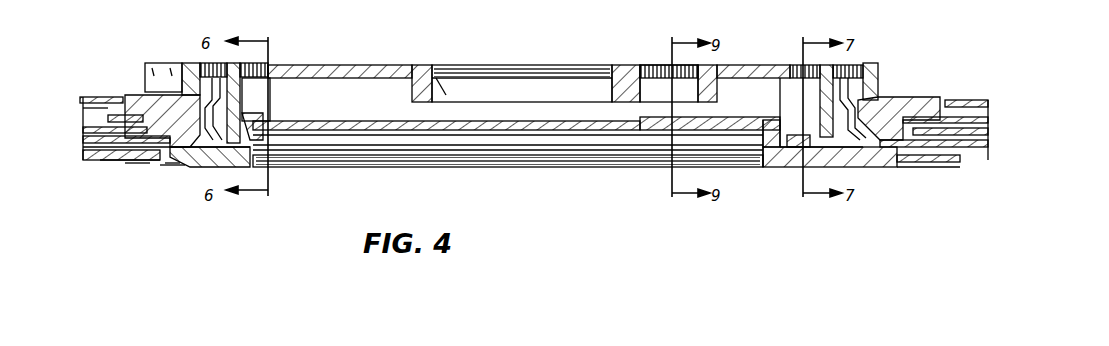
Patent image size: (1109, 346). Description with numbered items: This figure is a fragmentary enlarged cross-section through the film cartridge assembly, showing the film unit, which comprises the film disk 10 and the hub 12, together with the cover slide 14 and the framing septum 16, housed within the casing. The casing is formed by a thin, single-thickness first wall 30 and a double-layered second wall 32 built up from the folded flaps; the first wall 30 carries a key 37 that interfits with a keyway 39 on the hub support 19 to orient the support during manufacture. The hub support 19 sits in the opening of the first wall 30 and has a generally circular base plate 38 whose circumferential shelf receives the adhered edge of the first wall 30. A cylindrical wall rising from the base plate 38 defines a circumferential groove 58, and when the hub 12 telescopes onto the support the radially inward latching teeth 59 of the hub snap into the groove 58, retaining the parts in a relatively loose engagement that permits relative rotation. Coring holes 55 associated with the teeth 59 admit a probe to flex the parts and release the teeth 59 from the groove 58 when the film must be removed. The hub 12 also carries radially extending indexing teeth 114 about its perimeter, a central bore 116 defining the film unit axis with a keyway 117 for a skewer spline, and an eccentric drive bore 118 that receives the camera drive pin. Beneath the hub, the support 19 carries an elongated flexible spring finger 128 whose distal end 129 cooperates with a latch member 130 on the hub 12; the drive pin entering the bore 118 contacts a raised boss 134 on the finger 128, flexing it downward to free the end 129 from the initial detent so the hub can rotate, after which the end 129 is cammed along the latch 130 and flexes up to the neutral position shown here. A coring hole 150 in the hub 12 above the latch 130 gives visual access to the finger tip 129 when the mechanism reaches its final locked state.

The film disk 10 is at (96, 150).
The hub 12 is at (340, 66).
The cover slide 14 is at (112, 117).
The framing septum 16 is at (82, 100).
The hub support 19 is at (777, 167).
The first wall 30 is at (113, 160).
The second wall 32 is at (950, 100).
The key 37 is at (142, 162).
The base plate 38 is at (175, 163).
The keyway 39 is at (167, 163).
The coring holes 55 is at (181, 63).
The groove 58 is at (190, 165).
The latching teeth 59 is at (200, 112).
The indexing teeth 114 is at (158, 63).
The hub bore 116 is at (607, 92).
The keyway 117 is at (436, 82).
The drive bore 118 is at (636, 83).
The spring finger 128 is at (570, 127).
The distal end 129 is at (270, 128).
The latch member 130 is at (260, 113).
The raised boss 134 is at (640, 118).
The coring hole 150 is at (275, 68).